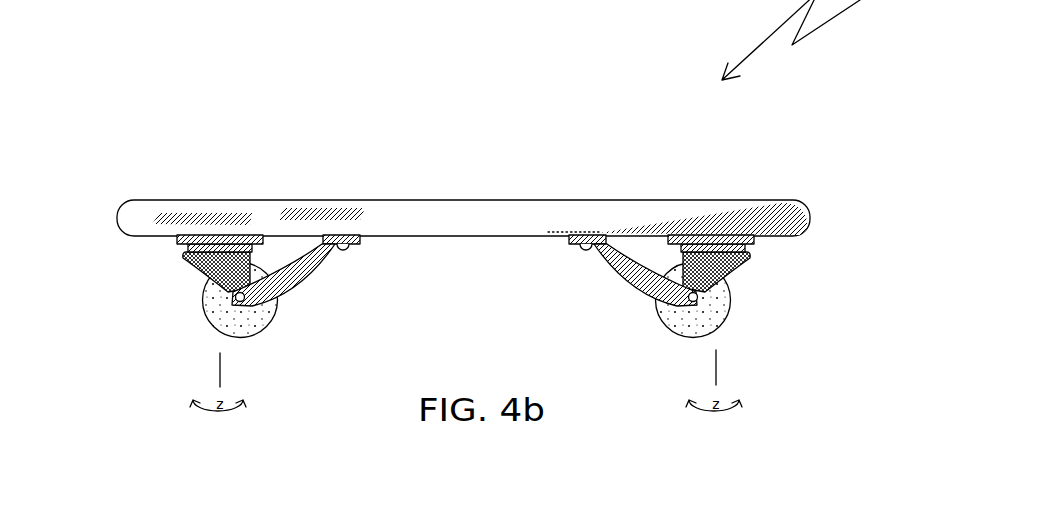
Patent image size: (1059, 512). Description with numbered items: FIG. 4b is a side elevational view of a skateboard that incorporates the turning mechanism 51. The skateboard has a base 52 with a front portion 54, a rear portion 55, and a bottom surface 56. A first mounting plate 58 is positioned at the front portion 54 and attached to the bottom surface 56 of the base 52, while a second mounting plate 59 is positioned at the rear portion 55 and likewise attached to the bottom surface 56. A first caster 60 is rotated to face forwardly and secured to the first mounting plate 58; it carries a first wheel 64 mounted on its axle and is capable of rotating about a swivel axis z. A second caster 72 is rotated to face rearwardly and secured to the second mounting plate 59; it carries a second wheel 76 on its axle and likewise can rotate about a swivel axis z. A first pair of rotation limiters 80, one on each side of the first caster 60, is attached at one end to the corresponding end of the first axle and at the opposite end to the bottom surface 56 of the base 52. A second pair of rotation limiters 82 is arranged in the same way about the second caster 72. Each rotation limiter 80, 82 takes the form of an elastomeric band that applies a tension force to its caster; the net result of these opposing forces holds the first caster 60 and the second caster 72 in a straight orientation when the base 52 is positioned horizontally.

The turning mechanism 51 is at (183, 355).
The base 52 is at (452, 227).
The front portion 54 is at (281, 200).
The rear portion 55 is at (651, 200).
The bottom surface 56 is at (139, 237).
The first mounting plate 58 is at (177, 244).
The second mounting plate 59 is at (757, 240).
The first caster 60 is at (188, 262).
The first wheel 64 is at (285, 333).
The second caster 72 is at (731, 262).
The second wheel 76 is at (664, 331).
The first pair of rotation limiters 80 is at (317, 282).
The second pair of rotation limiters 82 is at (636, 282).